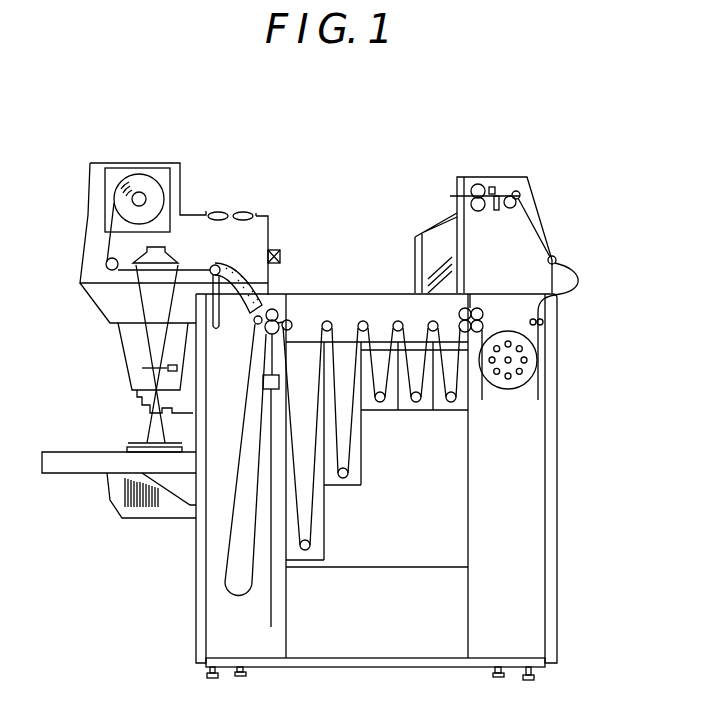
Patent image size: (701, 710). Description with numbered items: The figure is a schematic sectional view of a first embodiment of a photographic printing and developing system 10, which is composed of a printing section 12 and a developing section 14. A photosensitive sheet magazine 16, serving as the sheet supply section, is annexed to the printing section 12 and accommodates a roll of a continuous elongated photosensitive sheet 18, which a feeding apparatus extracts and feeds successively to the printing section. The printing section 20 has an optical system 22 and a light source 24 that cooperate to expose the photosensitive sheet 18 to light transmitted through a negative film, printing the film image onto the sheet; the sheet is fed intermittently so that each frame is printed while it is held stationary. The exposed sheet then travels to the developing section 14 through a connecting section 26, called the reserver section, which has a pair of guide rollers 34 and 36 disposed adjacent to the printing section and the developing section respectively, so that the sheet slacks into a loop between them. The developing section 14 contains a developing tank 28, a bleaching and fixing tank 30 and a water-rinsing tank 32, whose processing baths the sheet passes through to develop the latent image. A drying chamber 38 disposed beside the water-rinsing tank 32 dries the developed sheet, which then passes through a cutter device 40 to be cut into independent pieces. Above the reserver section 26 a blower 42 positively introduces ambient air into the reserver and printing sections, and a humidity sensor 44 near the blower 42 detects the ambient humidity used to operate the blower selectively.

The film processing apparatus 10 is at (367, 146).
The printing section 12 is at (195, 200).
The developing section 14 is at (367, 213).
The photosensitive sheet magazine 16 is at (105, 198).
The photosensitive sheet 18 is at (122, 175).
The printing section 20 is at (118, 344).
The optical system 22 is at (143, 403).
The light source 24 is at (122, 516).
The connecting section (reserver section) 26 is at (284, 293).
The developing tank 28 is at (308, 567).
The bleaching and fixing tank 30 is at (362, 487).
The water-rinsing tank 32 is at (413, 410).
The guide roller 34 is at (207, 270).
The guide roller 36 is at (247, 337).
The drying chamber 38 is at (530, 400).
The cutter device 40 is at (493, 176).
The blower 42 is at (245, 212).
The humidity sensor 44 is at (283, 250).